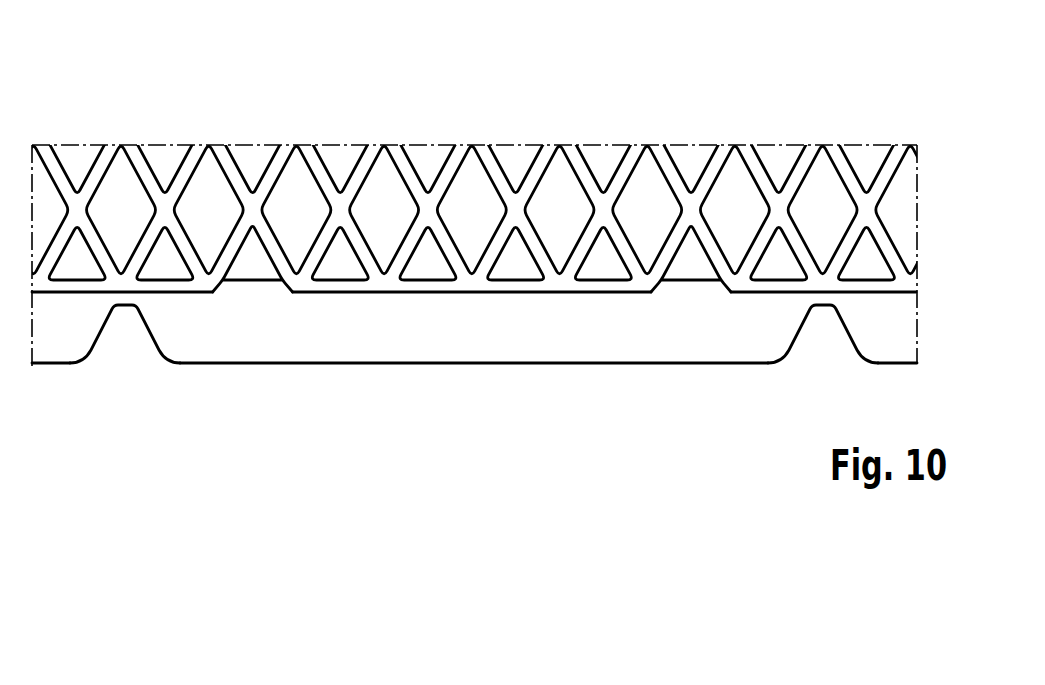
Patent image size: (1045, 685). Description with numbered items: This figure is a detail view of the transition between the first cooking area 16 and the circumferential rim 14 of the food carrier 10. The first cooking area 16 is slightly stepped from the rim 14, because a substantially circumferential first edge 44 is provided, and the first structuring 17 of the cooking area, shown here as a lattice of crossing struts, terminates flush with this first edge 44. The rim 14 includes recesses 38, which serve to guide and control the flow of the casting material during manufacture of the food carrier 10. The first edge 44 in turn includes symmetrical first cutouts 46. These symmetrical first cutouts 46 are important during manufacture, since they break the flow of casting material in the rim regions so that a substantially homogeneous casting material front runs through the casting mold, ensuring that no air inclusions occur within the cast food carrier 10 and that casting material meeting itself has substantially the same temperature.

The food carrier 10 is at (149, 78).
The circumferential rim 14 is at (182, 333).
The first cooking area 16 is at (330, 160).
The first structuring 17 is at (410, 174).
The recesses 38 is at (125, 356).
The first edge 44 is at (522, 284).
The symmetrical first cutouts 46 is at (258, 296).